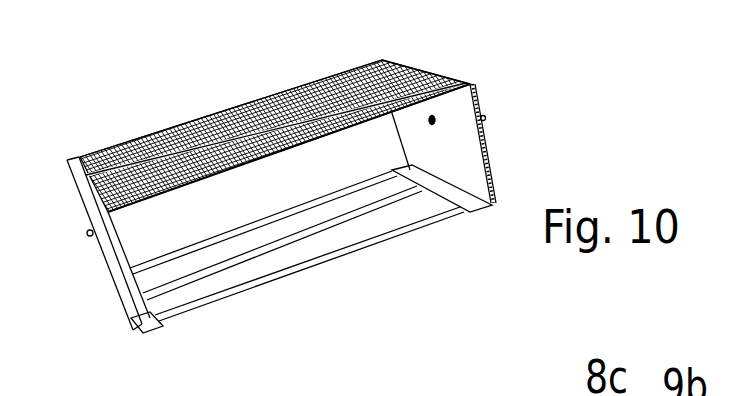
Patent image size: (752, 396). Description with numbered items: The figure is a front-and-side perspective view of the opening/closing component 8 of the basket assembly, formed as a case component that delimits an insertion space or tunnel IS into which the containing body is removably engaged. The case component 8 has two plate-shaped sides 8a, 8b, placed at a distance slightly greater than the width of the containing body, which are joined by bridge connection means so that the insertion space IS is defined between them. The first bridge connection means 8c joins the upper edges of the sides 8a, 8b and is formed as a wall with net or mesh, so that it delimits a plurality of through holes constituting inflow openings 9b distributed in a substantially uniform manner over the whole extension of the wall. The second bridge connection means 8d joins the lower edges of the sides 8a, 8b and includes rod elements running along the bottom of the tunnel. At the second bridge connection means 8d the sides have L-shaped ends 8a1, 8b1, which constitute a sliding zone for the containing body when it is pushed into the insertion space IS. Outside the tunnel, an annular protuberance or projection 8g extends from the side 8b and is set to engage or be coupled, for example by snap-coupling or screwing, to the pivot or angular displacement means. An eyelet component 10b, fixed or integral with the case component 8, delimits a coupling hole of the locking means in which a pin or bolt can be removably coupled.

The opening/closing component 8 is at (262, 100).
The side 8a is at (490, 160).
The L-shaped end 8a1 is at (493, 205).
The side 8b is at (115, 273).
The L-shaped end 8b1 is at (158, 327).
The first bridge connection means 8c is at (150, 143).
The second bridge connection means 8d is at (323, 223).
The projection 8g is at (86, 238).
The inflow openings 9b is at (368, 75).
The eyelet component 10b is at (485, 112).
The insertion space or tunnel IS is at (277, 193).